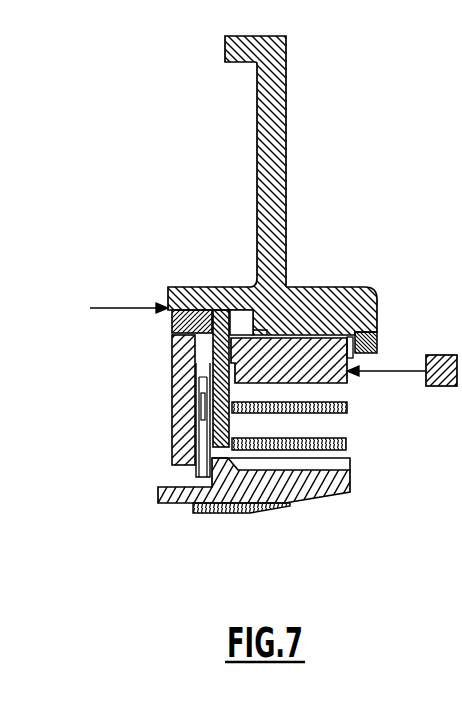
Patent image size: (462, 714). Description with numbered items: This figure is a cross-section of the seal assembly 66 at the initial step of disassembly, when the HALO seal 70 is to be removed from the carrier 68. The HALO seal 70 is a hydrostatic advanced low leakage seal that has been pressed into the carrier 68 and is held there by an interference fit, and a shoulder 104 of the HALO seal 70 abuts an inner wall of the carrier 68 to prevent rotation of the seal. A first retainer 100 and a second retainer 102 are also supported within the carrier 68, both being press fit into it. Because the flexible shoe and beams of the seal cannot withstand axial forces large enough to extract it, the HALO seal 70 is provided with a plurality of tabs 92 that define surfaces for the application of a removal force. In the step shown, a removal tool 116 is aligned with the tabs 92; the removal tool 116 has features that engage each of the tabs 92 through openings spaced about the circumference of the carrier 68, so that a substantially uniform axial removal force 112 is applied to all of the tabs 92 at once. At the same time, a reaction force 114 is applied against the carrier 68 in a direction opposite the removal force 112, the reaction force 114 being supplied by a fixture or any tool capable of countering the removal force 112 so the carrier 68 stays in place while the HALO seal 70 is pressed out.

The seal assembly 66 is at (317, 153).
The carrier 68 is at (283, 293).
The HALO seal 70 is at (333, 496).
The tabs 92 is at (286, 358).
The first retainer 100 is at (211, 414).
The second retainer 102 is at (183, 367).
The shoulder 104 is at (239, 328).
The removal force 112 is at (405, 371).
The reaction force 114 is at (107, 307).
The removal tool 116 is at (430, 387).